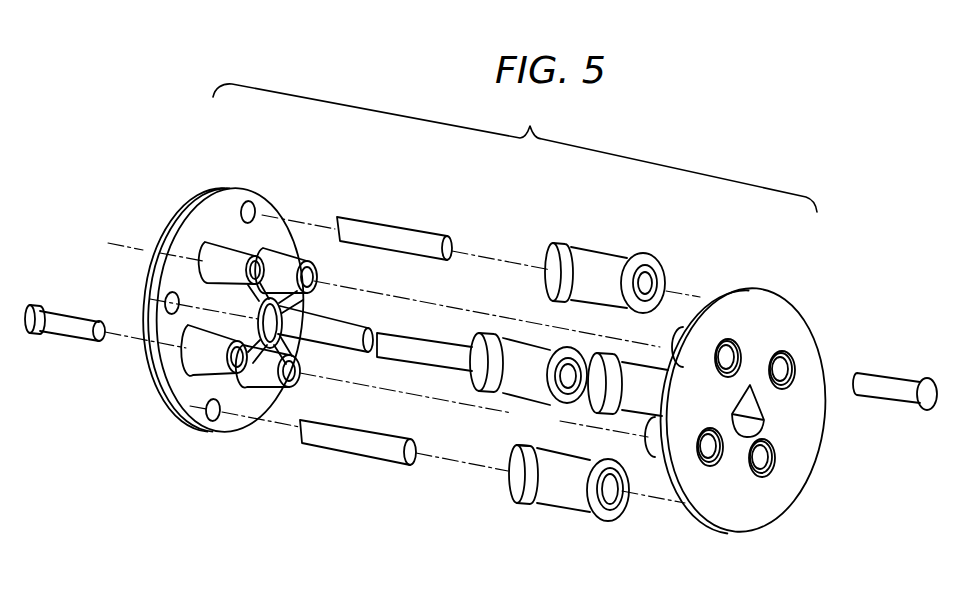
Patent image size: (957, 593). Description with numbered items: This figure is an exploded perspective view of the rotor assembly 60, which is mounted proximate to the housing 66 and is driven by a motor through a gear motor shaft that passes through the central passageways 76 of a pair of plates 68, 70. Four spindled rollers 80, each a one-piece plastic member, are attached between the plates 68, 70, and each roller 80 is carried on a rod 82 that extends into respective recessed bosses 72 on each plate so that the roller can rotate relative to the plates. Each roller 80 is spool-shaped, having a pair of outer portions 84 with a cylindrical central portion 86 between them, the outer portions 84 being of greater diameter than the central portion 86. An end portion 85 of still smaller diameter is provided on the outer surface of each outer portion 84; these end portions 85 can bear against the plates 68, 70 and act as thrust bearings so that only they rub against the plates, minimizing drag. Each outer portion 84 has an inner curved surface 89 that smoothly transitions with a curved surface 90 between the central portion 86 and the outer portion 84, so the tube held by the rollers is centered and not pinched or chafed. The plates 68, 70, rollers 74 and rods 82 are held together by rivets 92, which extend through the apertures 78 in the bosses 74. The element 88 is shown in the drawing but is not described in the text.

The rotor assembly 60 is at (515, 148).
The housing 66 is at (18, 538).
The plate 68 is at (185, 390).
The plate 70 is at (773, 495).
The recessed bosses 72 is at (255, 203).
The bosses 74 is at (268, 350).
The central passageways 76 is at (284, 305).
The apertures 78 is at (242, 262).
The spindled roller 80 is at (480, 385).
The rod 82 is at (387, 232).
The outer portions 84 is at (508, 480).
The end portion 85 is at (655, 278).
The cylindrical central portion 86 is at (548, 473).
The bushing flange 88 is at (523, 453).
The inner curved surface 89 is at (353, 583).
The curved surface 90 is at (545, 428).
The rivets 92 is at (66, 340).